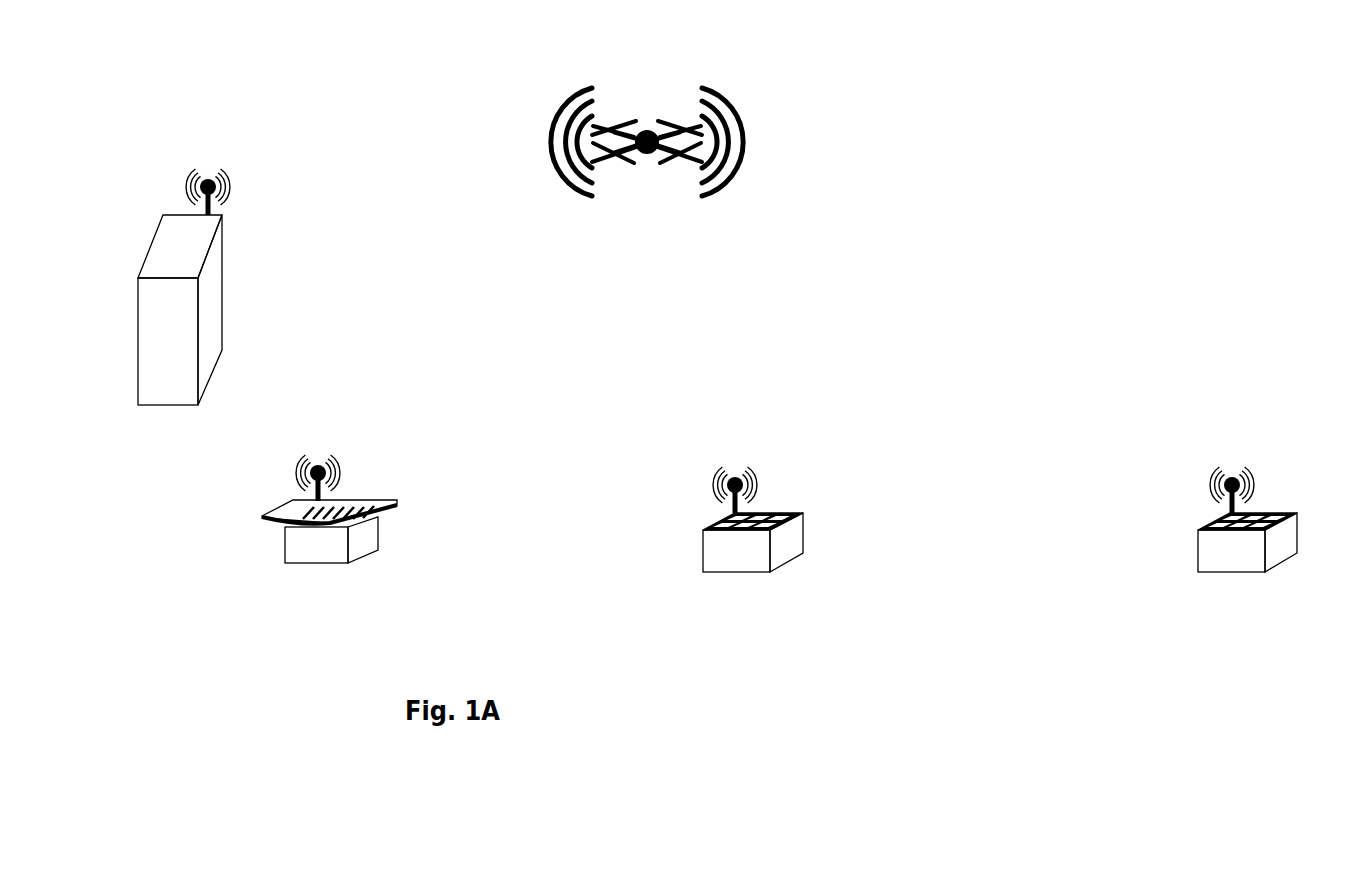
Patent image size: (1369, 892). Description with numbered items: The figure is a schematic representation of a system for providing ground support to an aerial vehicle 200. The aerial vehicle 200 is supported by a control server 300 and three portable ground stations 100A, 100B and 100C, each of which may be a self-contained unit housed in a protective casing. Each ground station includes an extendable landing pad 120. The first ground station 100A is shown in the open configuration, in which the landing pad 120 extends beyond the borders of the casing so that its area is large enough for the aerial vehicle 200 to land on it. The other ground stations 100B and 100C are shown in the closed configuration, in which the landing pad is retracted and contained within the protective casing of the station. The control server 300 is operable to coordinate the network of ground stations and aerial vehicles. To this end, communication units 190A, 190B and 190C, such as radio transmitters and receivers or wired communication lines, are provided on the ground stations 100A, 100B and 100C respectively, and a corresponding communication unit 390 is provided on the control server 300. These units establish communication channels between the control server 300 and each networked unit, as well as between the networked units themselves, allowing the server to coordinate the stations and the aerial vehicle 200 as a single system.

The first portable ground station 100A is at (285, 532).
The second portable ground station 100B is at (712, 540).
The third portable ground station 100C is at (1207, 540).
The extendable landing pad 120 is at (347, 480).
The communication unit of first ground station 190A is at (370, 447).
The communication unit of second ground station 190B is at (787, 456).
The communication unit of third ground station 190C is at (1270, 454).
The aerial vehicle 200 is at (647, 107).
The control server 300 is at (225, 310).
The communication unit of control server 390 is at (254, 161).